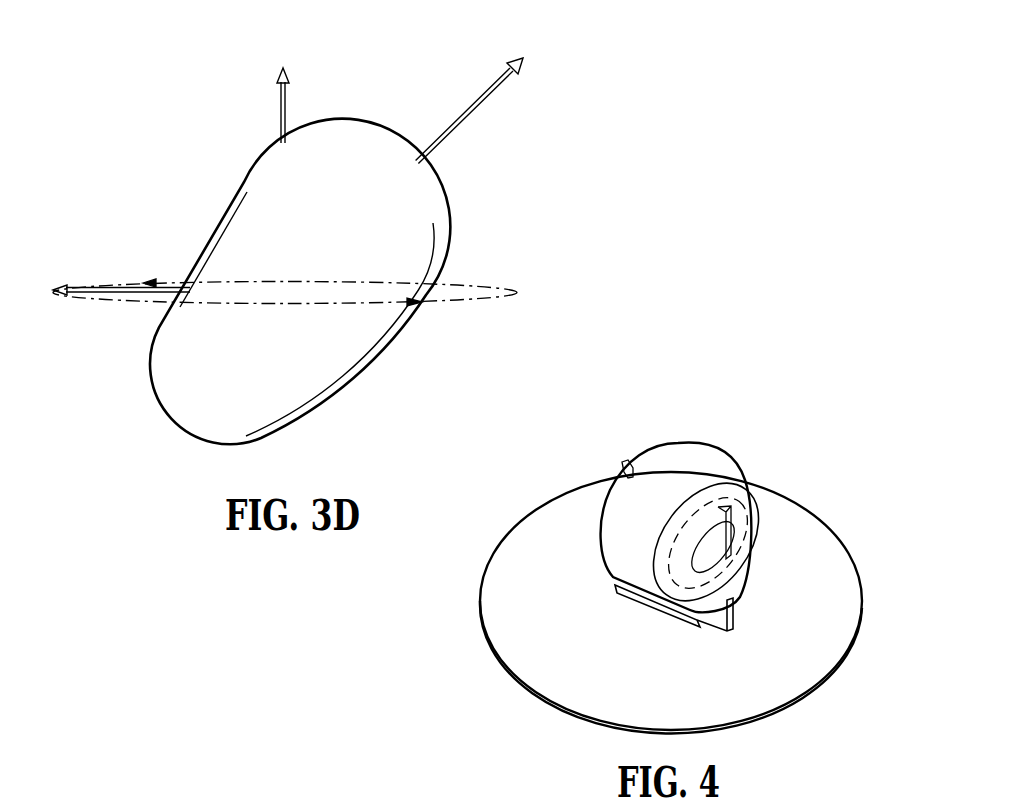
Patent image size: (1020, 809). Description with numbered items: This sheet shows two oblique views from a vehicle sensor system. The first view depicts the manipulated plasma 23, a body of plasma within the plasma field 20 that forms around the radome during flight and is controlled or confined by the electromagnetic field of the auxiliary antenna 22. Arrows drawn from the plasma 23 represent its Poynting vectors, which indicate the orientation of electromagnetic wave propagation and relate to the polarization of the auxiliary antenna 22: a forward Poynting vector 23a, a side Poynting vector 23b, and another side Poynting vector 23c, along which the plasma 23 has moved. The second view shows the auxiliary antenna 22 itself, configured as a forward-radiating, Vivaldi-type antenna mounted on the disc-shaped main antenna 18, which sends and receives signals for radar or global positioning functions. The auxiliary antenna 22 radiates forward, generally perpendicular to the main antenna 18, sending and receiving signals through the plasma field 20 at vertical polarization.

In FIG. 3D, the plasma 23 is at (323, 345).
In FIG. 3D, the forward Poynting vector 23a is at (285, 108).
In FIG. 3D, the side Poynting vector 23b is at (112, 295).
In FIG. 3D, the side Poynting vector 23c is at (475, 110).
In FIG. 4, the main antenna 18 is at (790, 660).
In FIG. 4, the plasma field 20 is at (693, 481).
In FIG. 4, the auxiliary antenna 22 is at (623, 476).